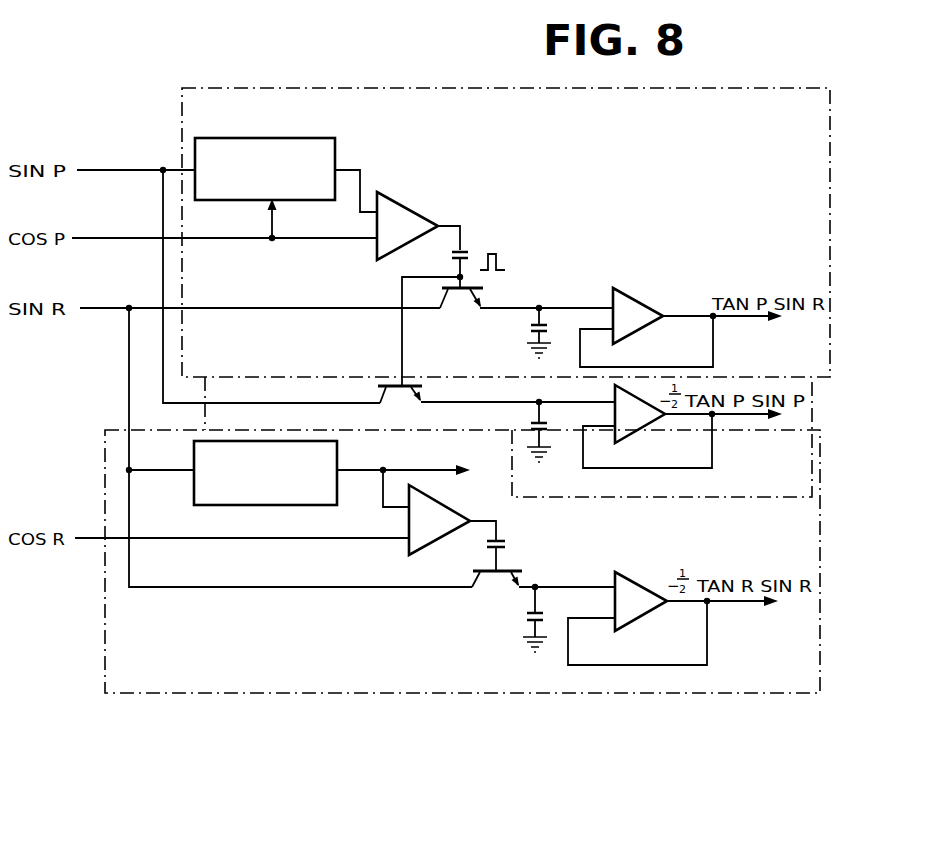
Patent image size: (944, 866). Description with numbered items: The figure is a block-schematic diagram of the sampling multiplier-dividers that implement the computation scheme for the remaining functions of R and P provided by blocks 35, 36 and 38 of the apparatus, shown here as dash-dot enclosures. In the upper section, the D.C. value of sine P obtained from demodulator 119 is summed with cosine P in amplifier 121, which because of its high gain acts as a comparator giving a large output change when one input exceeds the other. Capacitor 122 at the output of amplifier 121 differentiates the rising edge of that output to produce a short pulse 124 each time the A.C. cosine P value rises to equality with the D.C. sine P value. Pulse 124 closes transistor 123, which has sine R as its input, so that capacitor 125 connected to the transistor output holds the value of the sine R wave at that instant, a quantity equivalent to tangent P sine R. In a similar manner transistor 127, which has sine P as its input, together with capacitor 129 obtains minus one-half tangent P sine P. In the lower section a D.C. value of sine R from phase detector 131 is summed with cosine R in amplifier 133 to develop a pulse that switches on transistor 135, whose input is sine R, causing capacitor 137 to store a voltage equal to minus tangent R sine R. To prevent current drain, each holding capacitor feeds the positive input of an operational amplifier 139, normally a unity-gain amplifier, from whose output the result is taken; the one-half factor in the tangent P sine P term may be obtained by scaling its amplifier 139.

The block 36 is at (440, 88).
The block 35 is at (815, 432).
The block 38 is at (243, 690).
The demodulator 119 is at (278, 138).
The amplifier 121 is at (401, 204).
The capacitor 122 is at (468, 253).
The transistor 123 is at (460, 299).
The pulse 124 is at (506, 266).
The capacitor 125 is at (548, 329).
The transistor 127 is at (398, 388).
The capacitor 129 is at (553, 428).
The phase detector 131 is at (339, 446).
The amplifier 133 is at (432, 508).
The transistor 135 is at (506, 562).
The capacitor 137 is at (525, 616).
The operational amplifier 139 is at (636, 296).